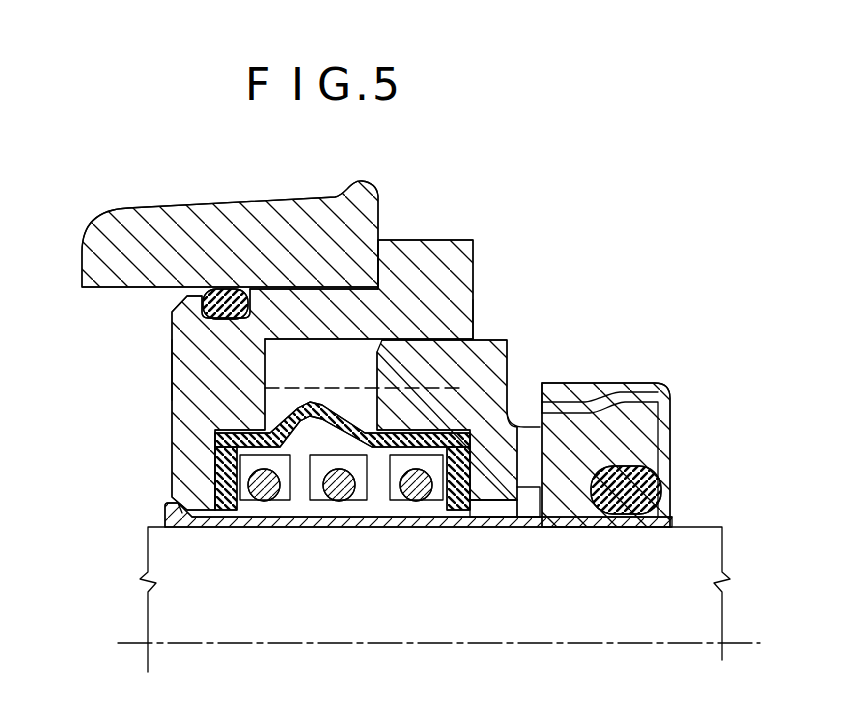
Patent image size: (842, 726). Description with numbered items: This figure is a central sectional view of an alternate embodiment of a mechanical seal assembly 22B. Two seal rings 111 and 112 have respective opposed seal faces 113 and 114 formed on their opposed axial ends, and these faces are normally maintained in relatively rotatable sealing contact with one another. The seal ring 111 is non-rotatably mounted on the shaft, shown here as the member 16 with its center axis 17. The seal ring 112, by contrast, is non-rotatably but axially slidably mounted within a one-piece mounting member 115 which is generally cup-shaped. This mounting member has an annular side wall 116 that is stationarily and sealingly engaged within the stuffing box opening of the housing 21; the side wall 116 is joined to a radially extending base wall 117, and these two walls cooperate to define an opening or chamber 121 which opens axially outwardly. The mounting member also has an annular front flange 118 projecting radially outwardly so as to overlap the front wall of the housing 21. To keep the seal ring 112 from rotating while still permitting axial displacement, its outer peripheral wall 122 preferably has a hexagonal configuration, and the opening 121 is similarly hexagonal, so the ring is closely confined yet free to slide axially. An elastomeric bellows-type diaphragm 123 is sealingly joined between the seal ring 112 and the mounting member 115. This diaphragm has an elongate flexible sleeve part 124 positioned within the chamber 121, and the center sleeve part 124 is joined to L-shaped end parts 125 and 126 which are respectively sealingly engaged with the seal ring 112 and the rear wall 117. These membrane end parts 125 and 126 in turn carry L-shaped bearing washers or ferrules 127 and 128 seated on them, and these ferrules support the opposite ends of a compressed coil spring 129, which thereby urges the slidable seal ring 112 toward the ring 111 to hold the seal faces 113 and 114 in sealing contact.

The housing 21 is at (180, 212).
The annular side wall 116 is at (292, 303).
The base wall 117 is at (202, 347).
The annular front flange 118 is at (467, 260).
The opening or chamber 121 is at (337, 340).
The outer peripheral wall 122 is at (490, 333).
The seal ring 112 is at (503, 370).
The mechanical seal assembly 22B is at (603, 283).
The seal face 114 is at (533, 448).
The seal face 113 is at (543, 443).
The seal ring 111 is at (637, 432).
The mounting member 115 is at (158, 370).
The L-shaped end part 126 is at (246, 508).
The L-shaped bearing washer or ferrule 128 is at (262, 488).
The flexible sleeve part 124 is at (336, 435).
The compressed coil spring 129 is at (339, 488).
The elastomeric bellows-type diaphragm 123 is at (376, 460).
The L-shaped bearing washer or ferrule 127 is at (417, 490).
The L-shaped end part 125 is at (457, 505).
The shaft 16 is at (160, 632).
The axis 17 is at (294, 646).